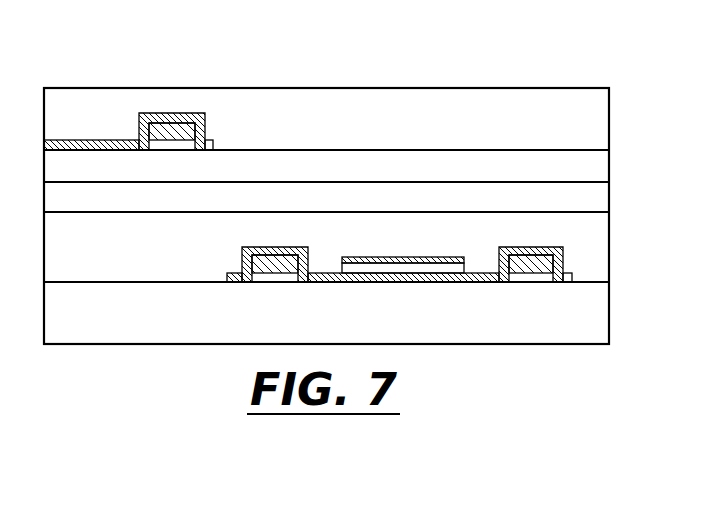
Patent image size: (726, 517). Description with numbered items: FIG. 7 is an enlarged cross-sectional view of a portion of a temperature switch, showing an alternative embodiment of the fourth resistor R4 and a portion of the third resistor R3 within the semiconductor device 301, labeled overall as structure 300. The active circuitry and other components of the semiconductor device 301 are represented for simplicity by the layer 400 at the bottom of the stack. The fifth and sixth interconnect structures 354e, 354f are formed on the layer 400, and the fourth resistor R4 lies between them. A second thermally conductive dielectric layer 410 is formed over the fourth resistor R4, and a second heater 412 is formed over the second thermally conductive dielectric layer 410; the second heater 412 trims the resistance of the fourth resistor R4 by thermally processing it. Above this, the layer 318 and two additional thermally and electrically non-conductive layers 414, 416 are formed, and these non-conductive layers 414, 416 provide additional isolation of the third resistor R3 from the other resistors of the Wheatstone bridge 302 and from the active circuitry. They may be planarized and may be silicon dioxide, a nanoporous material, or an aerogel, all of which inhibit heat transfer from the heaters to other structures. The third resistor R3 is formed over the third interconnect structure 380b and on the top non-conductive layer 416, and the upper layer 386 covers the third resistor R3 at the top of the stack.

The semiconductor structure 300 is at (592, 62).
The Wheatstone bridge 302 is at (104, 62).
The semiconductor device 301 is at (631, 358).
The dielectric layer 386 is at (595, 118).
The non-conductive layer 416 is at (595, 166).
The non-conductive layer 414 is at (595, 200).
The dielectric layer 318 is at (595, 231).
The layer 400 is at (593, 308).
The third interconnect structure 380b is at (162, 130).
The third resistor R3 is at (205, 118).
The fifth interconnect structure 354e is at (265, 264).
The fourth resistor R4 is at (306, 251).
The second heater 412 is at (395, 258).
The second thermally conductive dielectric layer 410 is at (441, 270).
The sixth interconnect structure 354f is at (557, 264).